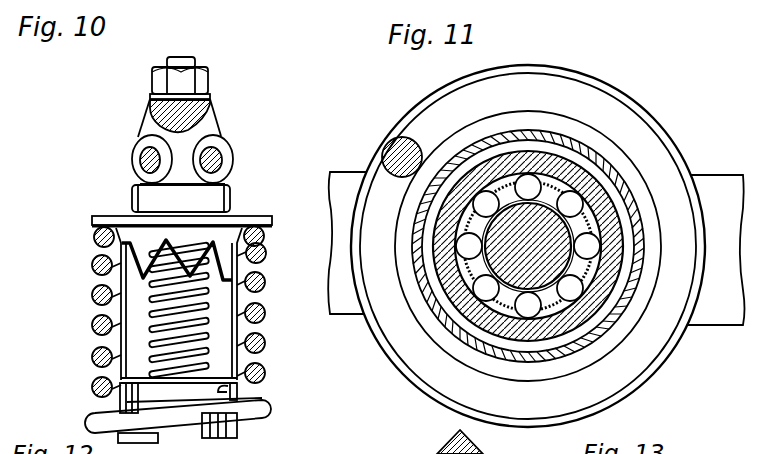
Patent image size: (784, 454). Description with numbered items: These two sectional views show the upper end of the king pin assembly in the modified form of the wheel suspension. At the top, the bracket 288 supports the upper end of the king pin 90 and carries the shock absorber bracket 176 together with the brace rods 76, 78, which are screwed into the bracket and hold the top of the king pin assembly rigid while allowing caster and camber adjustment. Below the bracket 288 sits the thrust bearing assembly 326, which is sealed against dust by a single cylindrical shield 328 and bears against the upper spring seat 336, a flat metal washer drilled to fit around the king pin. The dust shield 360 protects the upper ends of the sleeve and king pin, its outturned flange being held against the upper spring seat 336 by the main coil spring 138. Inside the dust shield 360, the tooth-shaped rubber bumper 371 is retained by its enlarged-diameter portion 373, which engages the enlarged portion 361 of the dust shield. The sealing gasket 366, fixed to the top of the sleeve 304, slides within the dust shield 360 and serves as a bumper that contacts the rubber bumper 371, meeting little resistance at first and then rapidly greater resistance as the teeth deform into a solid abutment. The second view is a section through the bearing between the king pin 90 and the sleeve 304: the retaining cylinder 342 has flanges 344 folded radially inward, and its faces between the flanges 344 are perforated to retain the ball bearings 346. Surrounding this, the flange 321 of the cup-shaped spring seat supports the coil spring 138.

In FIG. 10, the shock absorber bracket 176 is at (210, 106).
In FIG. 10, the bracket 288 is at (214, 123).
In FIG. 10, the brace rod 78 is at (140, 161).
In FIG. 10, the brace rod 76 is at (218, 159).
In FIG. 10, the thrust bearing assembly 326 is at (125, 190).
In FIG. 10, the cylindrical shield 328 is at (233, 190).
In FIG. 10, the upper spring seat 336 is at (115, 218).
In FIG. 10, the enlarged diameter portion 373 is at (240, 223).
In FIG. 10, the rubber bumper 371 is at (168, 249).
In FIG. 10, the enlarged portion of dust shield 361 is at (263, 240).
In FIG. 10, the dust shield 360 is at (238, 298).
In FIG. 11, the dust shield 360 is at (622, 306).
In FIG. 10, the sealing gasket 366 is at (229, 389).
In FIG. 11, the flange 321 is at (420, 105).
In FIG. 11, the coil spring 138 is at (385, 148).
In FIG. 11, the retaining cylinder 342 is at (578, 198).
In FIG. 11, the ball bearings 346 is at (590, 205).
In FIG. 11, the flanges 344 is at (575, 224).
In FIG. 11, the king pin 90 is at (560, 255).
In FIG. 11, the sleeve 304 is at (590, 327).